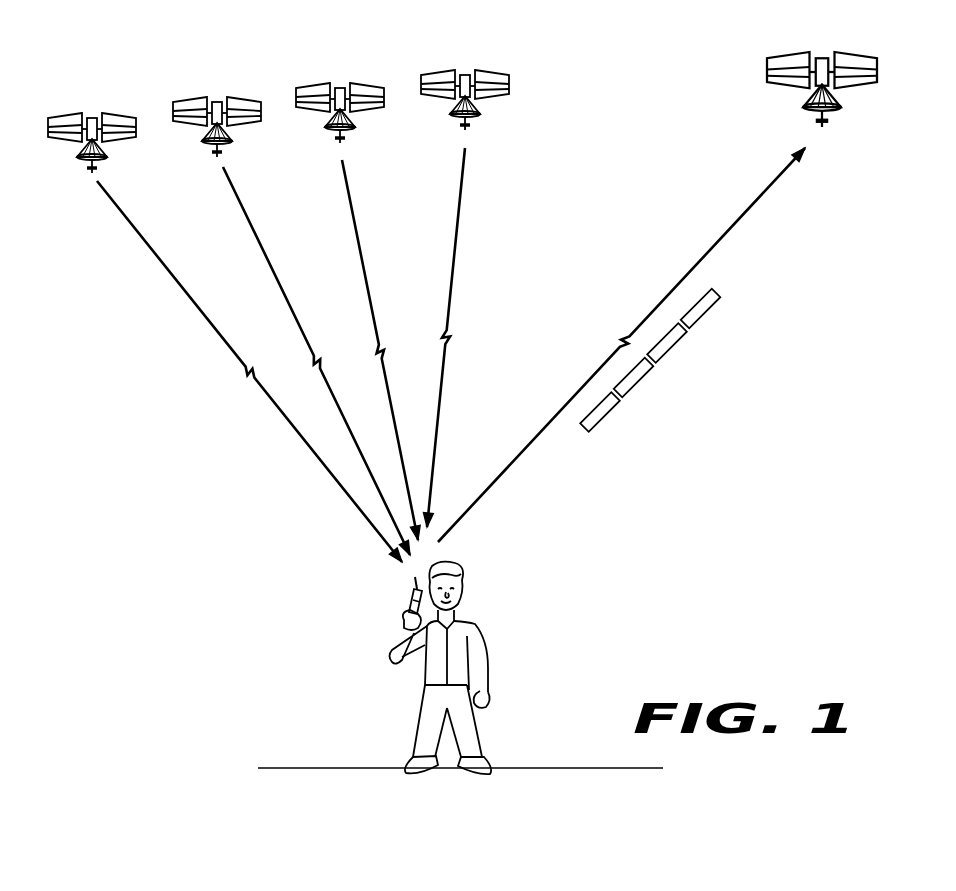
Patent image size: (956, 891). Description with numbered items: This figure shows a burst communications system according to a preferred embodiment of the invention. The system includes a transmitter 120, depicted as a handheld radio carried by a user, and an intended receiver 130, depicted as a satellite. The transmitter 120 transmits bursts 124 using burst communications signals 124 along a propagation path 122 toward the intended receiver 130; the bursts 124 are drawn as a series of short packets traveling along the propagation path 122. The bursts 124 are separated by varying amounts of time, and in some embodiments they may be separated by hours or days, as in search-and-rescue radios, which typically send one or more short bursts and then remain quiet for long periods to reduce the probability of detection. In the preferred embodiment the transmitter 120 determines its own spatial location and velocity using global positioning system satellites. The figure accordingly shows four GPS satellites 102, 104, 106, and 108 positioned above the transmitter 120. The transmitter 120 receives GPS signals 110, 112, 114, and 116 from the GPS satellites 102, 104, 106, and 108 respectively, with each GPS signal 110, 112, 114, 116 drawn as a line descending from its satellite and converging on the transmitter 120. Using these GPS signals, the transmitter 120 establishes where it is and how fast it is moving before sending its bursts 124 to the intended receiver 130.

The GPS satellite 102 is at (119, 113).
The GPS satellite 104 is at (242, 97).
The GPS satellite 106 is at (366, 83).
The GPS satellite 108 is at (491, 70).
The GPS signal 110 is at (322, 463).
The GPS signal 112 is at (273, 268).
The GPS signal 114 is at (362, 260).
The GPS signal 116 is at (456, 248).
The transmitter 120 is at (410, 602).
The propagation path 122 is at (538, 437).
The bursts 124 is at (603, 417).
The intended receiver 130 is at (857, 55).